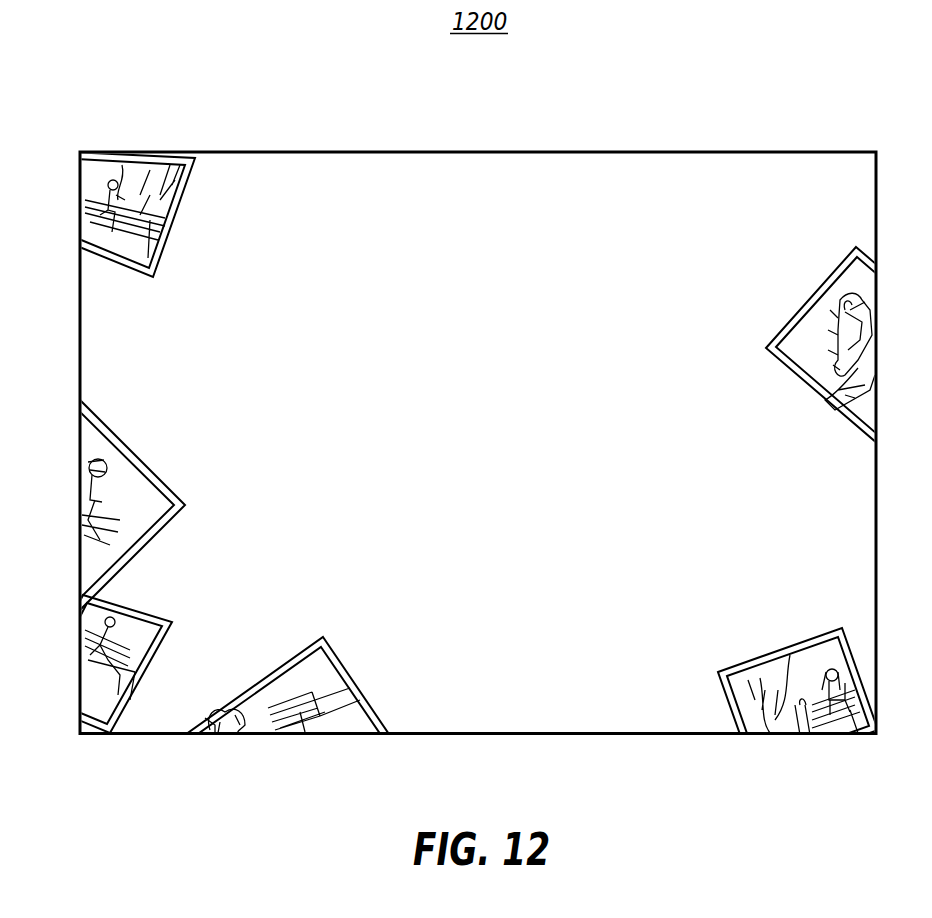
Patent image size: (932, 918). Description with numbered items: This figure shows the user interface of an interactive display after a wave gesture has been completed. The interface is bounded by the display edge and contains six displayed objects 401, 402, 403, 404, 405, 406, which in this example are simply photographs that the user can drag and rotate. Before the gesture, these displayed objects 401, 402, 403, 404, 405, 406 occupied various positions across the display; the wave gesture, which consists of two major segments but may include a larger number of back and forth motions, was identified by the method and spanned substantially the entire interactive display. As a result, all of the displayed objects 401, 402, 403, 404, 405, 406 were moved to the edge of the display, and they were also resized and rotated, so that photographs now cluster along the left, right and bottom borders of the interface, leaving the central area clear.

The displayed object 401 is at (289, 233).
The displayed object 402 is at (135, 449).
The displayed object 403 is at (138, 600).
The displayed object 404 is at (350, 680).
The displayed object 405 is at (813, 300).
The displayed object 406 is at (782, 648).